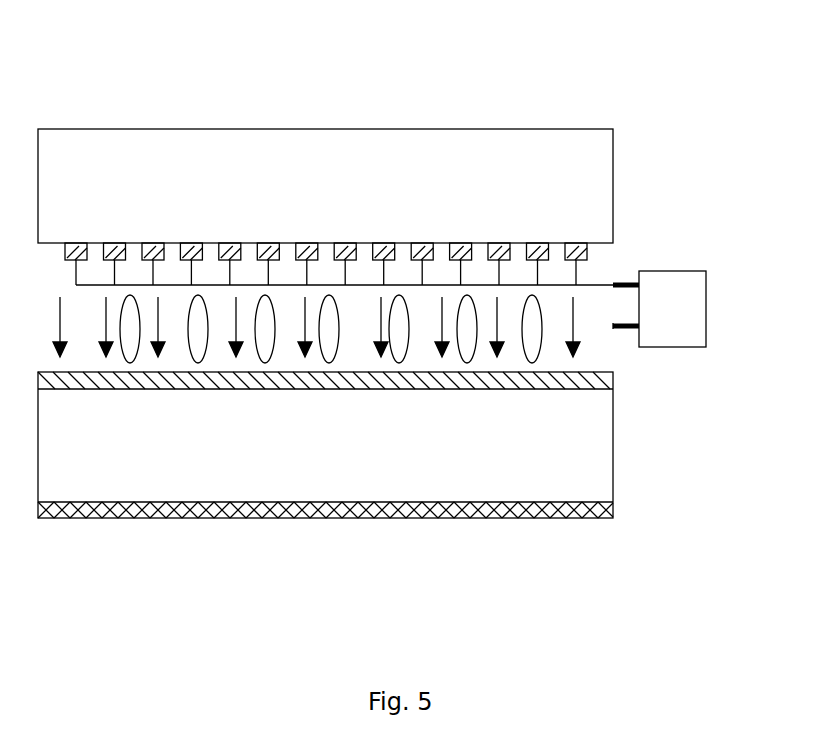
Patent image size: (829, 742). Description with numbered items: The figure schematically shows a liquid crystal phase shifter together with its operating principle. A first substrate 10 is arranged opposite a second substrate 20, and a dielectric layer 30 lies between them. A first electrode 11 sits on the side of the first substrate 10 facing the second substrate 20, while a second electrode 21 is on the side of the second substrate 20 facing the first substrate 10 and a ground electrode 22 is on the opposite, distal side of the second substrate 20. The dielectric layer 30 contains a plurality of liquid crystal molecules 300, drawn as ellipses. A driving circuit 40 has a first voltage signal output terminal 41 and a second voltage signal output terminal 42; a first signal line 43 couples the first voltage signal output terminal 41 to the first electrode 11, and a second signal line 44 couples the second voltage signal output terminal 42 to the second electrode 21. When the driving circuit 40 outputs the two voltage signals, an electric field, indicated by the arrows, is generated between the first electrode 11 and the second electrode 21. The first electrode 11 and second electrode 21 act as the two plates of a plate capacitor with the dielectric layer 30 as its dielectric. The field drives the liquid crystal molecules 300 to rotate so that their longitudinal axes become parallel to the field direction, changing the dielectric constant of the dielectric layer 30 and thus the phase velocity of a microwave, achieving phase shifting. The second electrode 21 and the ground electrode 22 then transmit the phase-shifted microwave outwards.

The first substrate 10 is at (505, 168).
The first electrode 11 is at (307, 248).
The second substrate 20 is at (490, 462).
The second electrode 21 is at (315, 383).
The ground electrode 22 is at (243, 520).
The dielectric layer 30 is at (81, 337).
The liquid crystal molecules 300 is at (529, 330).
The driving circuit 40 is at (675, 282).
The first voltage signal output terminal 41 is at (625, 283).
The second voltage signal output terminal 42 is at (623, 328).
The first signal line 43 is at (610, 286).
The second signal line 44 is at (618, 332).